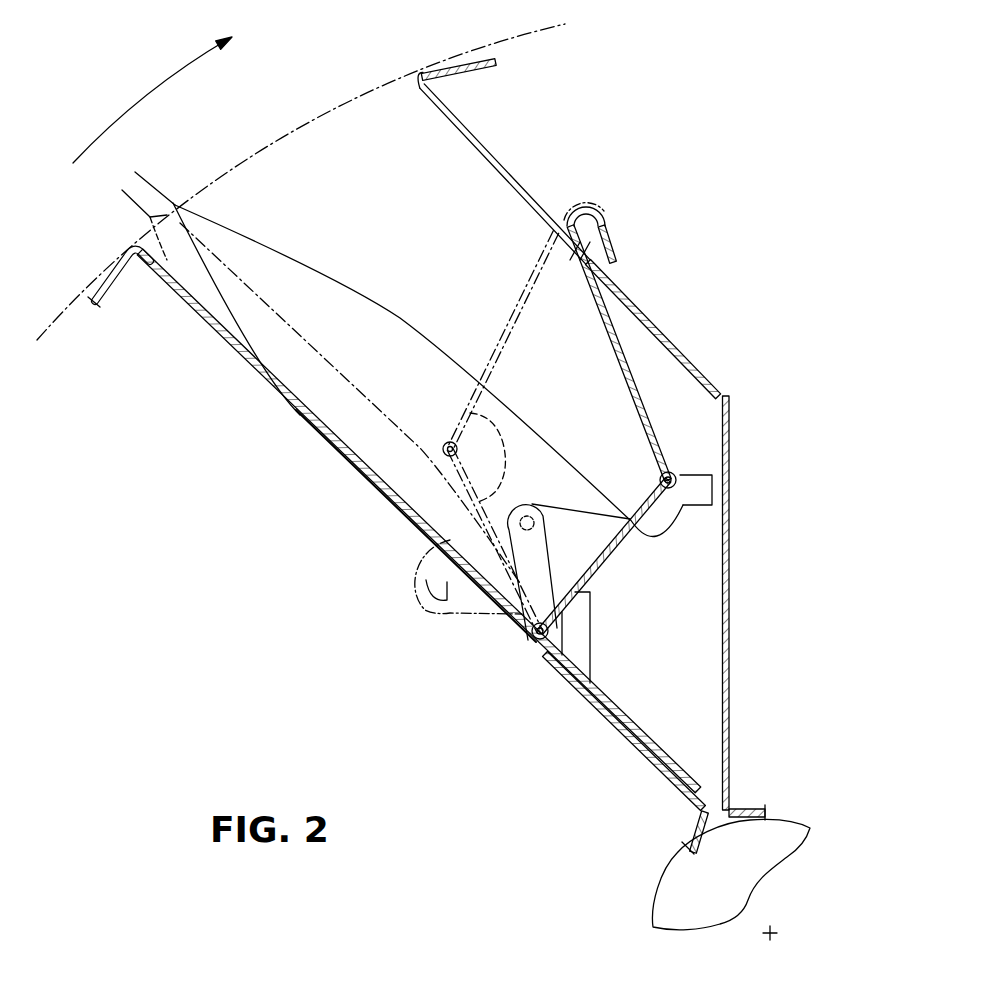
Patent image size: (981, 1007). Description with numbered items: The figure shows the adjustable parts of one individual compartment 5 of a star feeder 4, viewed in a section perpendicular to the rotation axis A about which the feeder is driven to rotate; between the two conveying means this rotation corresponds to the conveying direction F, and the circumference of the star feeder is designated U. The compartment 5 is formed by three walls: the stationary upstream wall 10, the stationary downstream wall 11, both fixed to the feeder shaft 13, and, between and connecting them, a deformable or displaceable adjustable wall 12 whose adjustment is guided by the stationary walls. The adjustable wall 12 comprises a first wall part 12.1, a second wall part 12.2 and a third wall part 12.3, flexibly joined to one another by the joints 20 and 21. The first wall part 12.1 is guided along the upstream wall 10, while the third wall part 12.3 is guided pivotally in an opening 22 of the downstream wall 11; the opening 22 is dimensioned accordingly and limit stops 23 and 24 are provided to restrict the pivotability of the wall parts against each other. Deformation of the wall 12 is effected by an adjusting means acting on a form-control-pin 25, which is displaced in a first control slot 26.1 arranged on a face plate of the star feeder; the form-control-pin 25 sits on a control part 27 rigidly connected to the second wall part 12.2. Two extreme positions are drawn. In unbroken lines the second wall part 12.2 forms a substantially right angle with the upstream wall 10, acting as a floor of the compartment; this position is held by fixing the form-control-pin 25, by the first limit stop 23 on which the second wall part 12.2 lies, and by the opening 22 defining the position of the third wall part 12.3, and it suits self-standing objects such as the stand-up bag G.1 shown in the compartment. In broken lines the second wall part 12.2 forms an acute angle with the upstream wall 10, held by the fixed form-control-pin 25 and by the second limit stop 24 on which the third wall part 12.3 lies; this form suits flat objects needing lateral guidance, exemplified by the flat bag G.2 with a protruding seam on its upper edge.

The star feeder 4 is at (622, 198).
The compartment 5 is at (437, 247).
The upstream wall 10 is at (368, 472).
The downstream wall 11 is at (490, 130).
The adjustable wall 12 is at (618, 539).
The first wall part 12.1 is at (658, 775).
The second wall part 12.2 is at (610, 553).
The third wall part 12.3 is at (643, 407).
The feeder shaft 13 is at (772, 833).
The joint 20 is at (524, 640).
The joint 21 is at (670, 486).
The opening 22 is at (508, 178).
The first limit stop 23 is at (580, 635).
The second limit stop 24 is at (493, 452).
The form-control-pin 25 is at (530, 508).
The first control slot 26.1 is at (438, 614).
The control part 27 is at (574, 565).
The conveying direction F is at (153, 90).
The circumference U is at (355, 100).
The stand-up bag G.1 is at (310, 278).
The flat bag G.2 is at (313, 373).
The rotation axis A is at (773, 933).